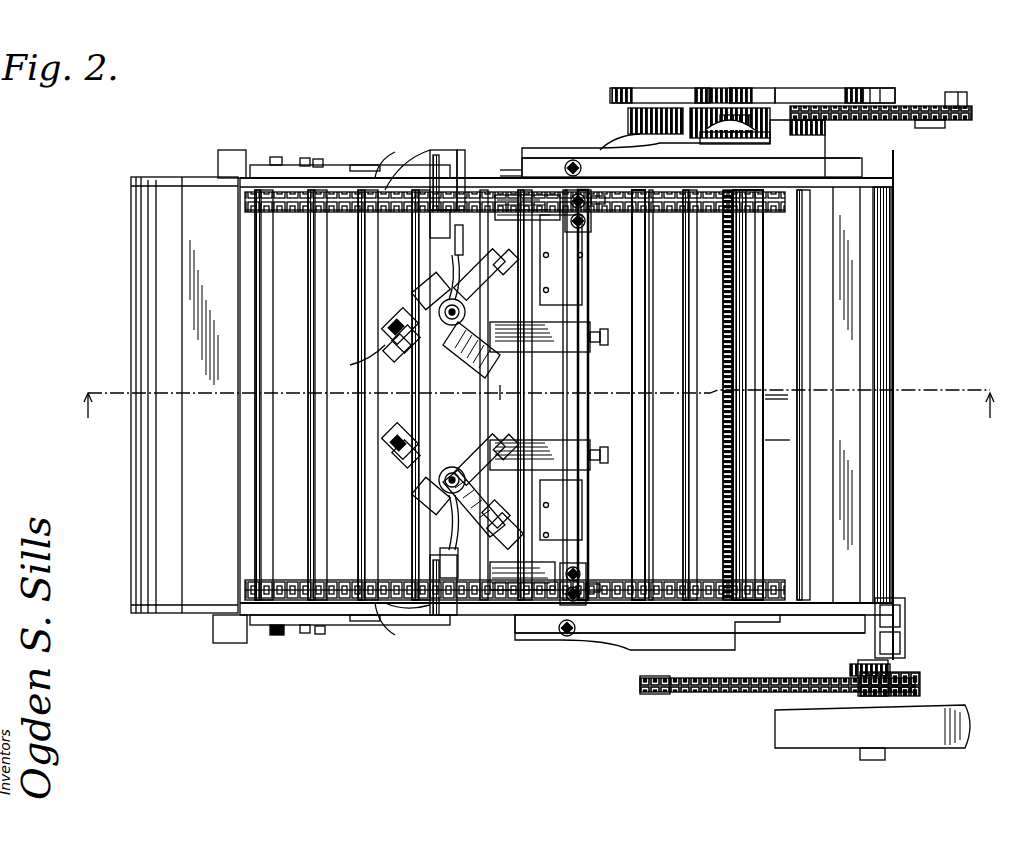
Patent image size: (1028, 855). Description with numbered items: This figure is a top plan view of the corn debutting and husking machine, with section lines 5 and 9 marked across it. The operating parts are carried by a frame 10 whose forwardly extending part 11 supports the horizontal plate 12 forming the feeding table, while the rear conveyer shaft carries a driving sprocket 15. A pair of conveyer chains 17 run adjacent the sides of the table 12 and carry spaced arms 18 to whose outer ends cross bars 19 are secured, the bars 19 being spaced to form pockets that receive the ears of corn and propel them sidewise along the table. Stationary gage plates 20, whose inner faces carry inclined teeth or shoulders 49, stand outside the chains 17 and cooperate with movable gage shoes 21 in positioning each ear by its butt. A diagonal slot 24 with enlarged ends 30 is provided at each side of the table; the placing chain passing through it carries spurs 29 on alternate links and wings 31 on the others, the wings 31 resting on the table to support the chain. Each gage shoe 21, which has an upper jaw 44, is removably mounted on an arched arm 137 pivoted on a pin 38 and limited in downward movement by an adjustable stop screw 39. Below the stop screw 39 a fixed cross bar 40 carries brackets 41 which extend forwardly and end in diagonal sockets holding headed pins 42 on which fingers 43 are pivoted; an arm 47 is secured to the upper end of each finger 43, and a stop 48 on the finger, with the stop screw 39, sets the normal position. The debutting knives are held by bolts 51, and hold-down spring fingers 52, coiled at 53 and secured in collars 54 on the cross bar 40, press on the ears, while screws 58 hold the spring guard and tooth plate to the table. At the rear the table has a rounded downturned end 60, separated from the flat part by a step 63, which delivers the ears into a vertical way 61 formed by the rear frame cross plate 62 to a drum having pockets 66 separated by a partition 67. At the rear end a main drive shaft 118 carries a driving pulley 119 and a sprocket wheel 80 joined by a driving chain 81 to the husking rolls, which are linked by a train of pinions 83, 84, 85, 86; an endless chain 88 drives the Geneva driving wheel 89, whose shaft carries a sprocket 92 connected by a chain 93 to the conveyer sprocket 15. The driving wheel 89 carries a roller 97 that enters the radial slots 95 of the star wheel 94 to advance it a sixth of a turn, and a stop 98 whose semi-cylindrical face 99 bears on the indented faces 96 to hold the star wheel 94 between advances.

The section line 5 is at (540, 397).
The section line 9 is at (425, 446).
The frame 10 is at (905, 630).
The forwardly extending part 11 is at (131, 327).
The horizontal plate 12 is at (316, 395).
The driving sprocket 15 is at (684, 693).
The conveyer chains 17 is at (300, 212).
The spaced arms 18 is at (322, 190).
The cross rods or bars 19 is at (314, 436).
The stationary gage plates 20 is at (280, 160).
The movable gage shoe 21 is at (399, 393).
The diagonal slot 24 is at (350, 488).
The teeth or spurs 29 is at (358, 361).
The ends of the slots 30 is at (400, 325).
The wings 31 is at (352, 437).
The pin 38 is at (735, 143).
The adjustable stop screw 39 is at (573, 160).
The fixed cross bar 40 is at (588, 412).
The fixed supporting arms or brackets 41 is at (549, 396).
The headed pin 42 is at (420, 288).
The finger 43 is at (480, 298).
The upper jaw 44 is at (430, 230).
The arm 47 is at (452, 266).
The stop 48 is at (468, 460).
The inclined teeth or shoulders 49 is at (372, 178).
The bolts 51 is at (555, 270).
The spring finger 52 is at (548, 220).
The coil 53 is at (505, 590).
The collar 54 is at (586, 572).
The screws 58 is at (553, 497).
The rounded downturned end 60 is at (763, 253).
The vertical way or passage 61 is at (764, 302).
The rear frame cross plate 62 is at (862, 395).
The step 63 is at (730, 308).
The pockets 66 is at (777, 451).
The partition 67 is at (776, 406).
The sprocket wheel 80 is at (922, 688).
The driving chain 81 is at (910, 680).
The pinion 83 is at (628, 116).
The pinion 84 is at (718, 88).
The pinion 85 is at (768, 128).
The pinion 86 is at (820, 132).
The endless chain 88 is at (946, 128).
The driving wheel 89 is at (924, 106).
The sprocket 92 is at (858, 696).
The chain 93 is at (773, 693).
The driven star wheel 94 is at (662, 88).
The radial slots 95 is at (740, 92).
The indented faces 96 is at (800, 95).
The roller 97 is at (966, 95).
The stop 98 is at (878, 90).
The semi-cylindrical face 99 is at (855, 88).
The shaft 118 is at (868, 760).
The drum 119 is at (872, 726).
The arm 137 is at (612, 670).